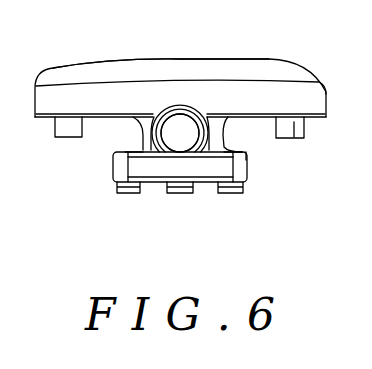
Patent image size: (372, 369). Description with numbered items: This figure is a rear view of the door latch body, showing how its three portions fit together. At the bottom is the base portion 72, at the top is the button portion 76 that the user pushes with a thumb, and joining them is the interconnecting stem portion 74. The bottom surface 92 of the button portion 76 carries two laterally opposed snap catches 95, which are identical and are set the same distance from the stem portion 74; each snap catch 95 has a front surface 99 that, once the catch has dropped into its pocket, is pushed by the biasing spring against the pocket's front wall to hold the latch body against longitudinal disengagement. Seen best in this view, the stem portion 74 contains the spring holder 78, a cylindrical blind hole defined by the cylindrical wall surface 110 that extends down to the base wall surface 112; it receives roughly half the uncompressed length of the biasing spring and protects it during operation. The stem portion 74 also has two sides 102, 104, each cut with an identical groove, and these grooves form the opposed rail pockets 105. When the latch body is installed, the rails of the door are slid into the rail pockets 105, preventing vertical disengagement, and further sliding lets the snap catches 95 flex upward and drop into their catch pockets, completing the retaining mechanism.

The base portion 72 is at (113, 170).
The stem portion 74 is at (140, 135).
The button portion 76 is at (268, 88).
The spring holder 78 is at (182, 133).
The bottom surface 92 is at (266, 120).
The snap catches 95 is at (55, 131).
The front surfaces 99 is at (294, 131).
The side 102 is at (143, 118).
The side 104 is at (222, 120).
The rail pockets 105 is at (108, 138).
The cylindrical wall surface 110 is at (180, 120).
The base wall surface 112 is at (172, 150).